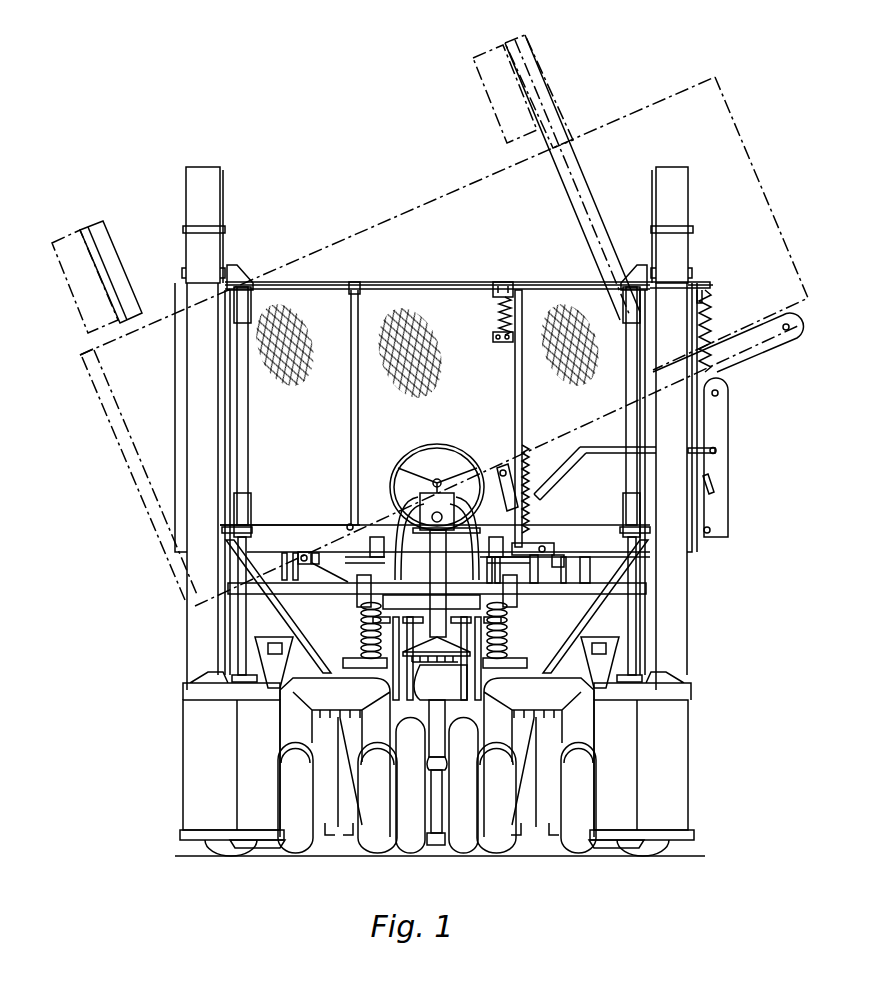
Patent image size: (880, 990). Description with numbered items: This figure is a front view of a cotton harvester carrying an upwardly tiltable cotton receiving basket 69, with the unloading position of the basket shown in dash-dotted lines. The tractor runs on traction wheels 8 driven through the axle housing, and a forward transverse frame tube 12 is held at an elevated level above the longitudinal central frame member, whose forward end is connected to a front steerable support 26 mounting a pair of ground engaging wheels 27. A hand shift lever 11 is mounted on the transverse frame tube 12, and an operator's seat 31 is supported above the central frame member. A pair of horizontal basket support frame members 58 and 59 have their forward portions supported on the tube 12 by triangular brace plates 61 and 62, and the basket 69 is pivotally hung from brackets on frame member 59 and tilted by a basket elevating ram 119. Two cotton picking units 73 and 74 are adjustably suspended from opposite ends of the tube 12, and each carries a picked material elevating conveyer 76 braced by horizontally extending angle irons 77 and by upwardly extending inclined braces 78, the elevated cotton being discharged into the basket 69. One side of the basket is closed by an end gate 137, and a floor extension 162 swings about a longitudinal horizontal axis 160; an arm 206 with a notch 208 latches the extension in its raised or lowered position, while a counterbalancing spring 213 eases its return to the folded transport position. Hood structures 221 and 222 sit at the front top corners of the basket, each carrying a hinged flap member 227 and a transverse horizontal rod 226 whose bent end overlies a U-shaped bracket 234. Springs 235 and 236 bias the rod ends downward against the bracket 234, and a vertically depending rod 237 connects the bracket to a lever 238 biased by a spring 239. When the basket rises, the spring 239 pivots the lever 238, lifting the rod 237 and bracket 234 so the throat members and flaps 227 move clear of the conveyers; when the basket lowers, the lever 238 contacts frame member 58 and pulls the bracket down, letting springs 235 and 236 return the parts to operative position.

The traction wheels 8 is at (222, 852).
The hand shift lever 11 is at (350, 527).
The forward transverse frame tube 12 is at (595, 583).
The front steerable support 26 is at (433, 732).
The ground engaging wheels 27 is at (447, 854).
The operator's seat 31 is at (413, 568).
The basket support frame member 58 is at (564, 559).
The basket support frame member 59 is at (300, 553).
The triangular brace plate 61 is at (322, 540).
The triangular brace plate 62 is at (542, 555).
The basket 69 is at (409, 210).
The cotton picking unit 73 is at (197, 762).
The cotton picking unit 74 is at (672, 757).
The picked material elevating conveyer 76 is at (680, 614).
The angle irons 77 is at (184, 683).
The inclined braces 78 is at (639, 563).
The basket elevating ram 119 is at (515, 667).
The end gate 137 is at (728, 110).
The longitudinal horizontal axis 160 is at (707, 530).
The floor extension 162 is at (728, 408).
The arm 206 is at (579, 447).
The notch 208 is at (590, 453).
The counterbalancing spring 213 is at (712, 324).
The hood structure 221 is at (200, 158).
The hood structure 222 is at (660, 158).
The transverse horizontal rod 226 is at (375, 290).
The flap member 227 is at (223, 214).
The U-shaped bracket 234 is at (494, 297).
The spring 235 is at (501, 335).
The spring 236 is at (520, 313).
The vertically depending rod 237 is at (513, 420).
The lever 238 is at (530, 543).
The spring 239 is at (522, 480).